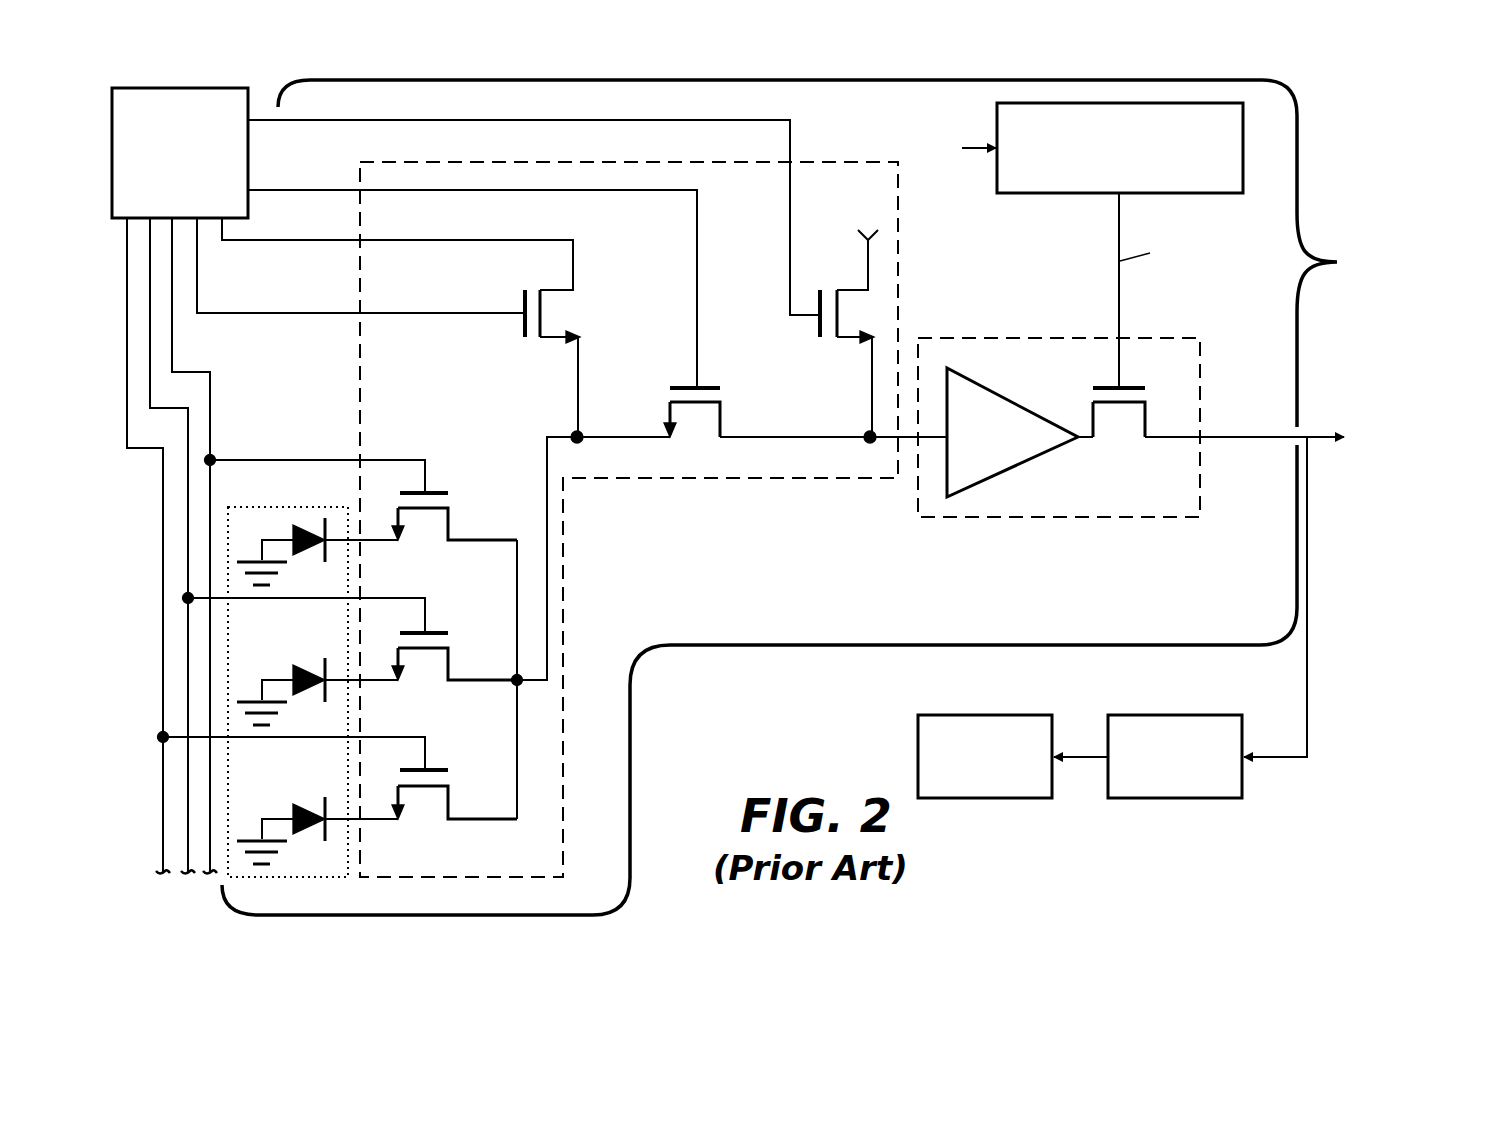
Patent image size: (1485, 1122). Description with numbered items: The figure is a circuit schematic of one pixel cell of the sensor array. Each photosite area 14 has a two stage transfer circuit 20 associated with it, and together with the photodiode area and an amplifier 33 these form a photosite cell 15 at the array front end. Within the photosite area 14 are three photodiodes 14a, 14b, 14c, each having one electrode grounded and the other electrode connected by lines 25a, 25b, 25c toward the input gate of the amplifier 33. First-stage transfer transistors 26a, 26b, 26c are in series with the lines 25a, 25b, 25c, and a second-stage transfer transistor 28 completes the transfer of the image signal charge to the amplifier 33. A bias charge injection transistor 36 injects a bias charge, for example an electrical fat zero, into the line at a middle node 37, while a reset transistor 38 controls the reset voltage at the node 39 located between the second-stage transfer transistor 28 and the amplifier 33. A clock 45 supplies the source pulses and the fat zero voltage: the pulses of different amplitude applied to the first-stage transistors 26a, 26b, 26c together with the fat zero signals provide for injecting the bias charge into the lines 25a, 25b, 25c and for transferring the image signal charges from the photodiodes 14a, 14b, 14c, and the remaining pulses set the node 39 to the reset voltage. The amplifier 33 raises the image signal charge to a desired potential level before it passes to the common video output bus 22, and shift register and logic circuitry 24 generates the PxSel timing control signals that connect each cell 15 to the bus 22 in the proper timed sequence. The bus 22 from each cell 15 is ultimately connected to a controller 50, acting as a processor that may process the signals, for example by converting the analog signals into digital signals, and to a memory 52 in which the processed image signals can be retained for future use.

The photosite cell 15 is at (1316, 94).
The clock 45 is at (212, 88).
The two stage transfer circuit 20 is at (558, 608).
The photosite area 14 is at (225, 784).
The photodiode 14a is at (305, 555).
The photodiode 14b is at (305, 695).
The photodiode 14c is at (295, 814).
The line 25a is at (368, 540).
The line 25b is at (368, 680).
The line 25c is at (366, 819).
The first-stage transfer transistor 26a is at (416, 530).
The first-stage transfer transistor 26b is at (416, 670).
The first-stage transfer transistor 26c is at (416, 810).
The bias charge injection transistor 36 is at (584, 313).
The middle node 37 is at (583, 439).
The second-stage transfer transistor 28 is at (695, 443).
The reset transistor 38 is at (864, 307).
The node 39 is at (866, 442).
The shift register and logic circuitry 24 is at (1078, 195).
The amplifier 33 is at (1195, 338).
The common video output bus 22 is at (1232, 437).
The controller 50 is at (1178, 715).
The memory 52 is at (988, 715).